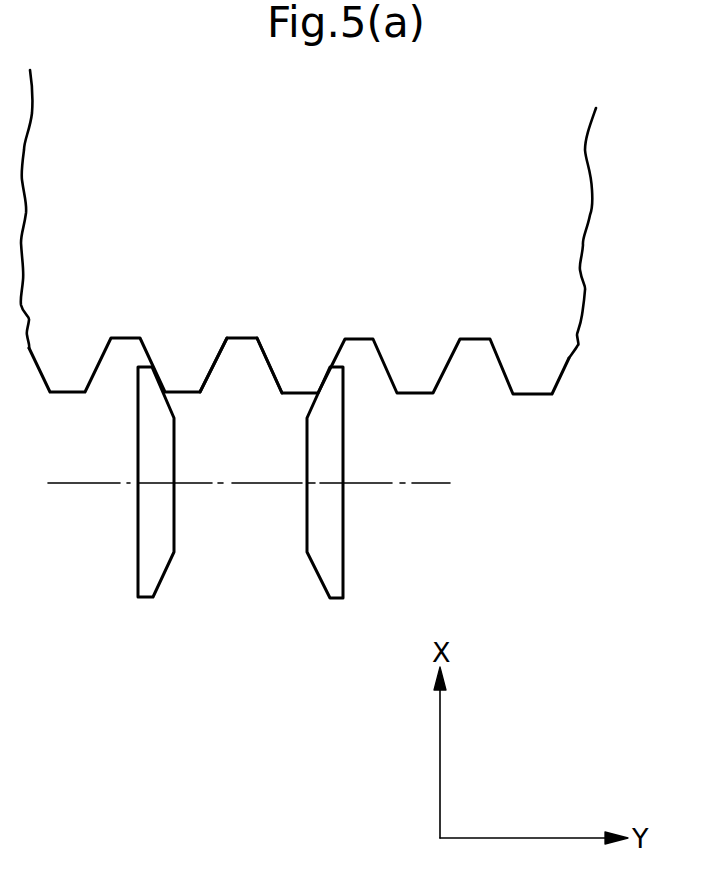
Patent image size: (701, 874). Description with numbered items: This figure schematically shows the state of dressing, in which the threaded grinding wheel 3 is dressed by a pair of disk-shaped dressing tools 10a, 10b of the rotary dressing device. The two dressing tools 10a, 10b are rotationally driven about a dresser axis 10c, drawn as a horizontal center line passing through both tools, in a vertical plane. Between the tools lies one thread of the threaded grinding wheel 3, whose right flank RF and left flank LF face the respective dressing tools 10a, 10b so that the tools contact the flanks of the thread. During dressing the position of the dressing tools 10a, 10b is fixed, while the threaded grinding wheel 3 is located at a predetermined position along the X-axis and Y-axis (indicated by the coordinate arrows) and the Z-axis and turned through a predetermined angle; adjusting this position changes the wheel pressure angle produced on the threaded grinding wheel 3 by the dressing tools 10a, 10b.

The threaded grinding wheel 3 is at (502, 287).
The dressing tool 10a is at (145, 590).
The dressing tool 10b is at (335, 590).
The dresser axis 10c is at (274, 484).
The left flank LF is at (217, 370).
The right flank RF is at (265, 370).